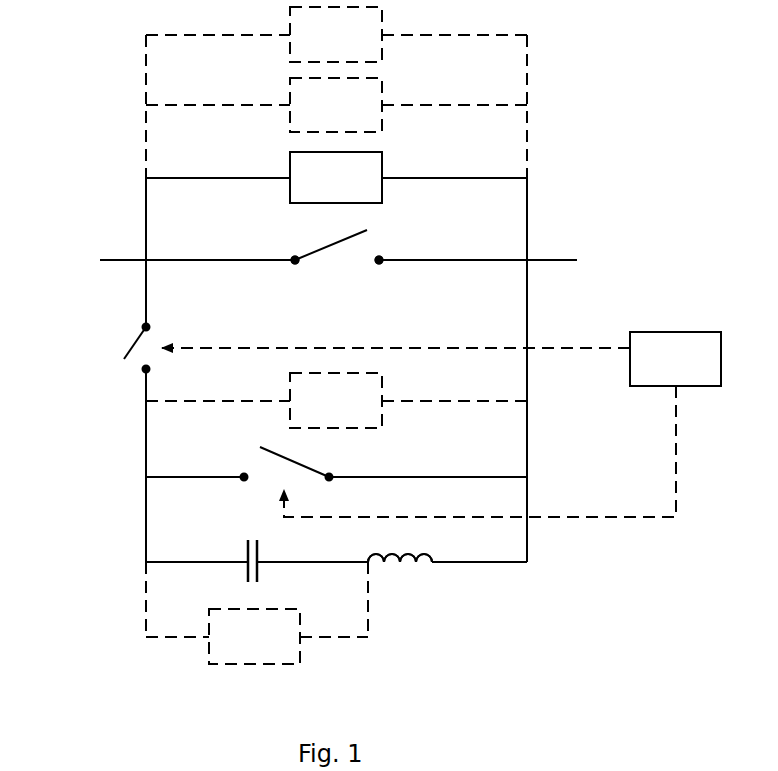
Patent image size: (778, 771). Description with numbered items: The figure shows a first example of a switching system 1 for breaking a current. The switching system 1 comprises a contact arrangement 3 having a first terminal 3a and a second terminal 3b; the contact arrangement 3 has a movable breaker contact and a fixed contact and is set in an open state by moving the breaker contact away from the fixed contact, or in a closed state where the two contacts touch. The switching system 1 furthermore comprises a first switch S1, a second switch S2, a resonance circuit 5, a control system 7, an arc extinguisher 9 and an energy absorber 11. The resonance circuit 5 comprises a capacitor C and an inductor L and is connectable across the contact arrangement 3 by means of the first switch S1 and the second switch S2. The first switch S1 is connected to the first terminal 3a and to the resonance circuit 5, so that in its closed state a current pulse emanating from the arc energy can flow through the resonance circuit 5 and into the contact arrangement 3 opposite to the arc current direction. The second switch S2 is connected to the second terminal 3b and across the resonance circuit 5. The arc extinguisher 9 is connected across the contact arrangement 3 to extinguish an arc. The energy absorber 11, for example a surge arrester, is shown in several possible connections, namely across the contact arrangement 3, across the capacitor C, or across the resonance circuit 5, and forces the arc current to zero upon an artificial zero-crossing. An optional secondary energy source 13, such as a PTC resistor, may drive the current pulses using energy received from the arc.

The switching system 1 is at (650, 136).
The contact arrangement 3 is at (298, 231).
The first terminal 3a is at (294, 259).
The second terminal 3b is at (380, 259).
The resonance circuit 5 is at (398, 584).
The control system 7 is at (667, 372).
The arc extinguisher 9 is at (328, 191).
The energy absorber 11 is at (295, 371).
The secondary energy source 13 is at (336, 34).
The first switch S1 is at (111, 346).
The second switch S2 is at (250, 451).
The capacitor C is at (237, 571).
The inductor L is at (429, 574).